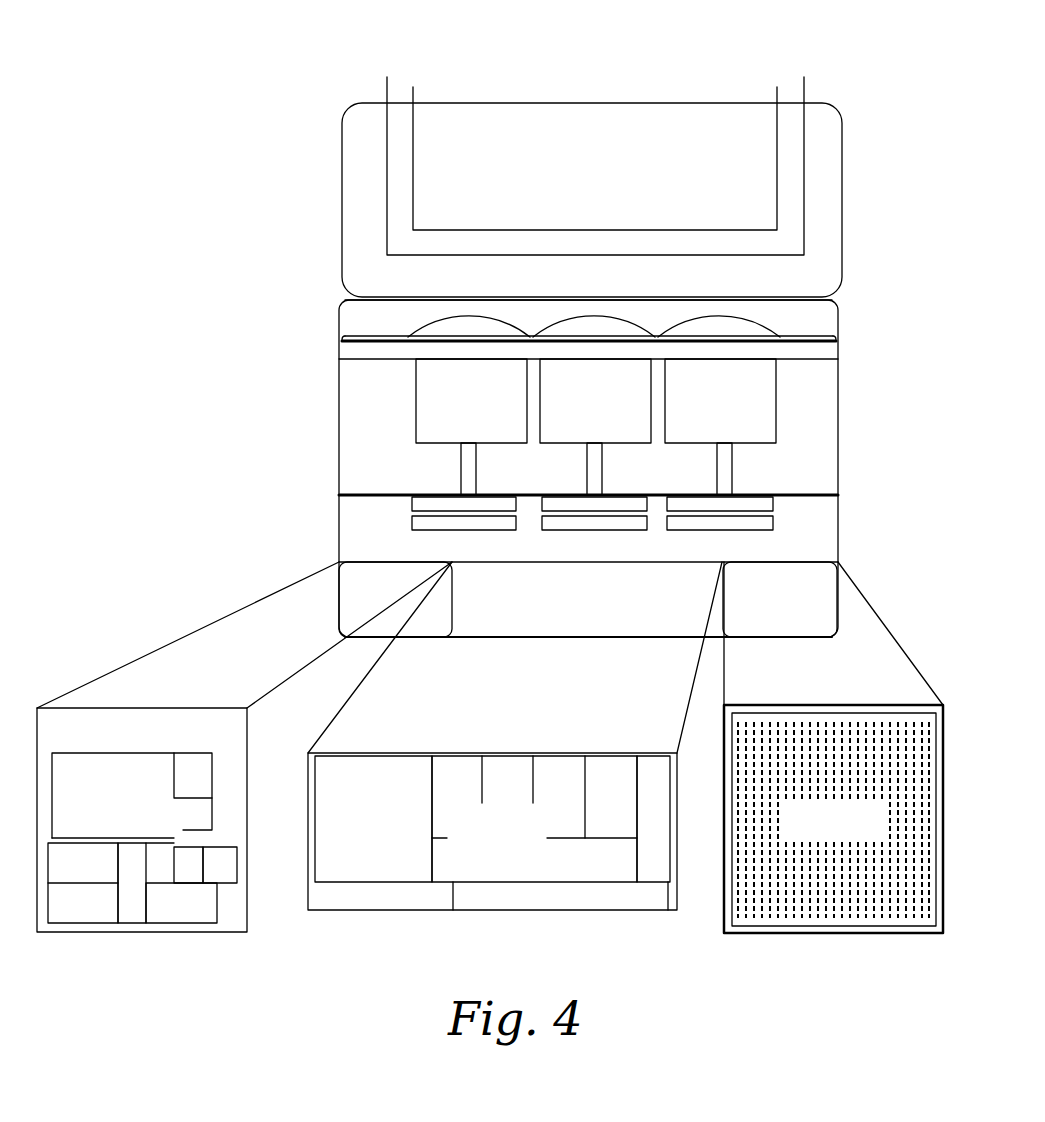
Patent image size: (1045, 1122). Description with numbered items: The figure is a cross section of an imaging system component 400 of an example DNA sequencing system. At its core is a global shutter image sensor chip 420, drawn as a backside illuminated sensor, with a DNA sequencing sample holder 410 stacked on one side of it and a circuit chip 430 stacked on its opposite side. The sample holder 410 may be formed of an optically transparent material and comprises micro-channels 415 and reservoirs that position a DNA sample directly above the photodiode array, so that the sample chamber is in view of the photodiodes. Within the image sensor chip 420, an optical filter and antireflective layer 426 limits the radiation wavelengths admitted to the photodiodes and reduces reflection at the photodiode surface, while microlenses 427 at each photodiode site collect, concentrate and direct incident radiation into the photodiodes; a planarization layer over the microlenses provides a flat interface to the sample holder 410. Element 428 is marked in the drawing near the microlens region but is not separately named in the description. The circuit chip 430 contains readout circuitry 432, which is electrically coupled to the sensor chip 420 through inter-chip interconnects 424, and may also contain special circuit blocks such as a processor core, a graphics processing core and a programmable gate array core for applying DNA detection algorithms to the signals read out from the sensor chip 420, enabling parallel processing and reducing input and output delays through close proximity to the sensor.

The imaging system component 400 is at (116, 44).
The DNA sequencing sample holder 410 is at (342, 200).
The micro-channels 415 is at (805, 91).
The global shutter image sensor chip 420 is at (315, 300).
The inter-chip interconnects 424 is at (733, 470).
The optical filter and antireflective layer 426 is at (817, 352).
The microlenses 427 is at (728, 327).
The lens array 428 is at (814, 311).
The circuit chip 430 is at (315, 495).
The readout circuitry 432 is at (768, 522).